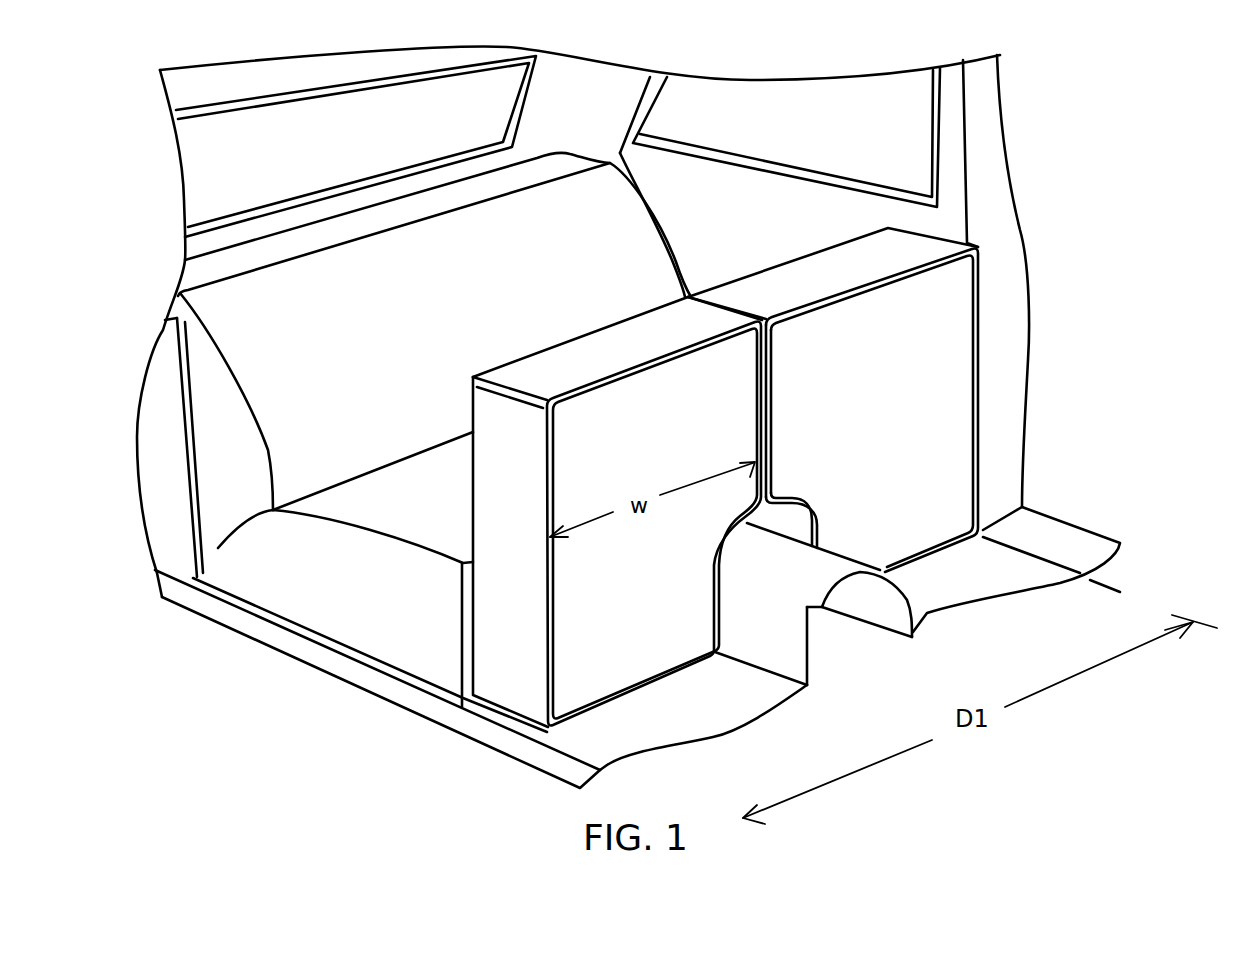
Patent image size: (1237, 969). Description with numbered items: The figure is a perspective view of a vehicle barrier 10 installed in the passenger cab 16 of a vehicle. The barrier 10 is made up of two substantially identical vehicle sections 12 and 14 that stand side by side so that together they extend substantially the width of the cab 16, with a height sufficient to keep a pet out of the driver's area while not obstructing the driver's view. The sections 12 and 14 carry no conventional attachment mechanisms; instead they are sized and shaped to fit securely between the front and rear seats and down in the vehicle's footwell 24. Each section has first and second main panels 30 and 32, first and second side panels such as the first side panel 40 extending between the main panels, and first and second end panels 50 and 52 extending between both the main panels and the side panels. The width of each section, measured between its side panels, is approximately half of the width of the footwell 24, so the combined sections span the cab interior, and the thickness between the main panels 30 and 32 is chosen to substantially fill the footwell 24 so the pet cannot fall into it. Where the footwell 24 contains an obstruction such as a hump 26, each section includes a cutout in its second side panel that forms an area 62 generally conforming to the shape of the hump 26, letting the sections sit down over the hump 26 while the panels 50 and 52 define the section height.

The vehicle barrier 10 is at (988, 334).
The vehicle section 12 is at (516, 354).
The vehicle section 14 is at (833, 375).
The passenger cab 16 is at (893, 180).
The footwell 24 is at (1010, 568).
The hump 26 is at (787, 652).
The first main panel 30 is at (657, 653).
The second main panel 32 is at (913, 513).
The first side panel 40 is at (505, 481).
The first end panel 50 is at (593, 355).
The second end panel 52 is at (560, 735).
The area 62 is at (782, 522).